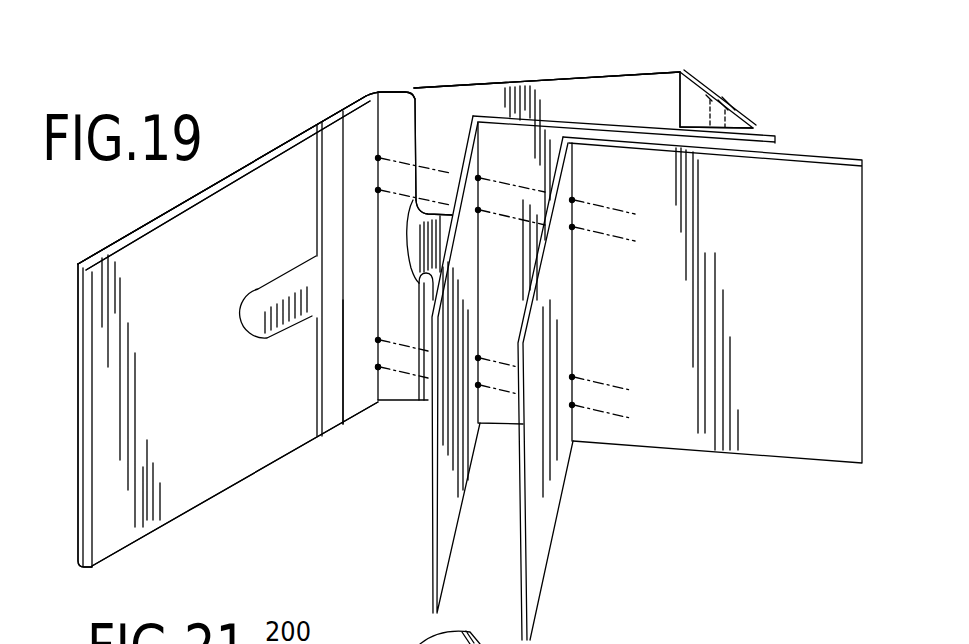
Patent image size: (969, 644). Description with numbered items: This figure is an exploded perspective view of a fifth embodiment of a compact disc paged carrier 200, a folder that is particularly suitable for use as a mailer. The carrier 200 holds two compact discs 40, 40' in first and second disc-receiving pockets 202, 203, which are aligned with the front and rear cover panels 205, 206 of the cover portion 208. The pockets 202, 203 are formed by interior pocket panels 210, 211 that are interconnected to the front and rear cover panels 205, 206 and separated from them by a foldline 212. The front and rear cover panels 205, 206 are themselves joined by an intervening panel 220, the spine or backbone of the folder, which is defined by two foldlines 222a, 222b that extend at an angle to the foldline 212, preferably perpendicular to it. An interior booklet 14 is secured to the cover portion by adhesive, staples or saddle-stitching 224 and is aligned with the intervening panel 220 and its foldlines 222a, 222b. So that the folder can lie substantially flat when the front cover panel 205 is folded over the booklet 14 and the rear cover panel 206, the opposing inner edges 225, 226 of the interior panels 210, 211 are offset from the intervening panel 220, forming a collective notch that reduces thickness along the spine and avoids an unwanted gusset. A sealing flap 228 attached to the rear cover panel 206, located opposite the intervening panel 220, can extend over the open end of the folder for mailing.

The compact disc paged carrier 200 is at (155, 206).
The first disc-receiving pocket 202 is at (320, 164).
The second disc-receiving pocket 203 is at (409, 135).
The front cover panel 205 is at (78, 326).
The rear cover panel 206 is at (648, 72).
The cover portion 208 is at (229, 162).
The interior pocket panel 210 is at (194, 409).
The interior pocket panel 211 is at (641, 112).
The foldline 212 is at (187, 205).
The intervening panel 220 is at (373, 135).
The foldline 222a is at (343, 337).
The foldline 222b is at (377, 175).
The saddle-stitching 224 is at (378, 380).
The inner edge 225 is at (343, 395).
The inner edge 226 is at (421, 203).
The sealing flap 228 is at (713, 98).
The compact disc 40 is at (252, 297).
The compact disc 40' is at (353, 300).
The interior booklet 14 is at (688, 452).